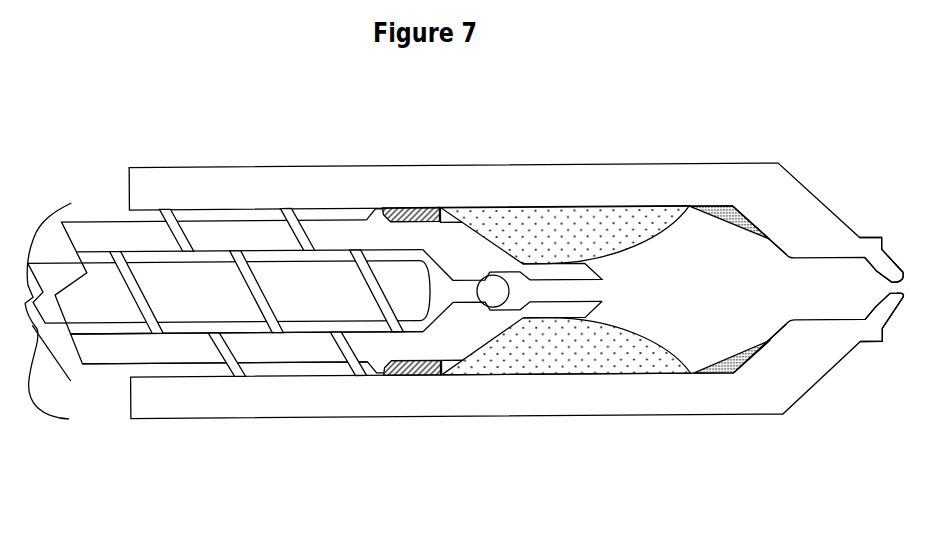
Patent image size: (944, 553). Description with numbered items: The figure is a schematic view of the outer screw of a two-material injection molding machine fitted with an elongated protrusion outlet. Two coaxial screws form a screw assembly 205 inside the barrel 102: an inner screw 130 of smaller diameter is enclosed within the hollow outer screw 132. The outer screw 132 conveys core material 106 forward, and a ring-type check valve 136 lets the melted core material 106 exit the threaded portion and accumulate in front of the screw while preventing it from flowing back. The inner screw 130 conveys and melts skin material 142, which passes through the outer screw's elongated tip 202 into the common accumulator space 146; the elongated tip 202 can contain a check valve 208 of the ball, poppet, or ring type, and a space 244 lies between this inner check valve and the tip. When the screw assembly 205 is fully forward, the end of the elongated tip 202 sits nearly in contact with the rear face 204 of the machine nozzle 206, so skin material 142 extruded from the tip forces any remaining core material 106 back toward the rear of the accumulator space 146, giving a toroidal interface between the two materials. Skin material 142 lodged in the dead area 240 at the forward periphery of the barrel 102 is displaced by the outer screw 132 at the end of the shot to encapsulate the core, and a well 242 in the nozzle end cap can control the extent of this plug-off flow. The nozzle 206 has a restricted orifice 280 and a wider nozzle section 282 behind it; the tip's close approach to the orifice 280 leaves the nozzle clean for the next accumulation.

The barrel 102 is at (596, 165).
The core material 106 is at (603, 364).
The inner screw 130 is at (267, 263).
The outer screw 132 is at (258, 363).
The ring-type check valve 136 is at (405, 204).
The skin material 142 is at (690, 207).
The accumulator space 146 is at (713, 344).
The elongated tip 202 is at (563, 323).
The rear face 204 is at (878, 271).
The screw assembly 205 is at (232, 293).
The machine nozzle 206 is at (810, 395).
The check valve 208 is at (484, 295).
The dead area 240 is at (745, 208).
The well 242 is at (763, 214).
The space 244 is at (537, 292).
The restricted orifice 280 is at (907, 301).
The wider nozzle section 282 is at (847, 324).